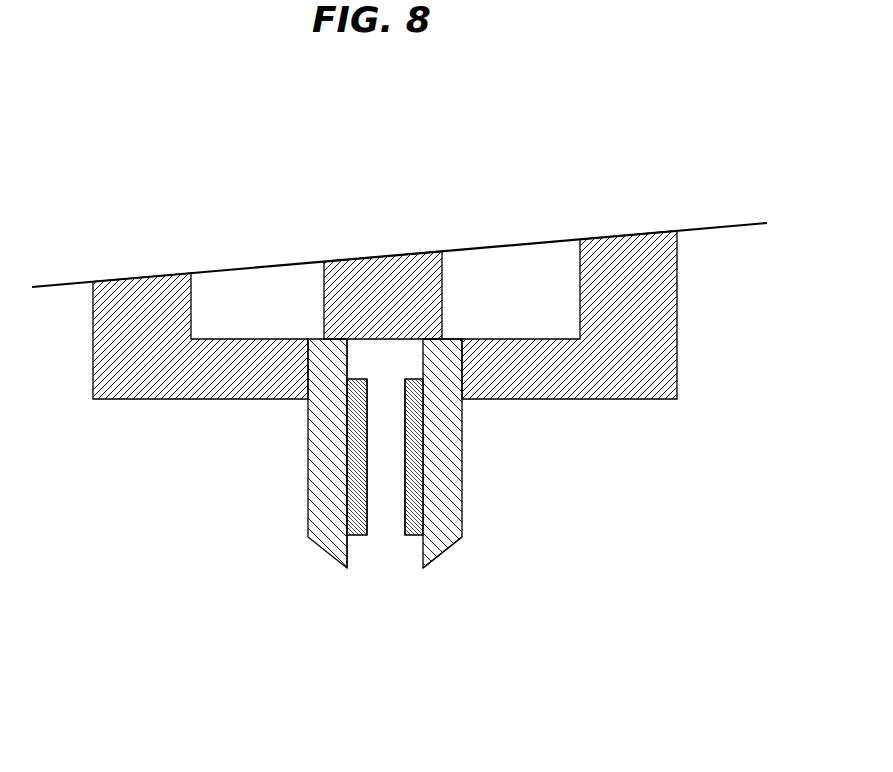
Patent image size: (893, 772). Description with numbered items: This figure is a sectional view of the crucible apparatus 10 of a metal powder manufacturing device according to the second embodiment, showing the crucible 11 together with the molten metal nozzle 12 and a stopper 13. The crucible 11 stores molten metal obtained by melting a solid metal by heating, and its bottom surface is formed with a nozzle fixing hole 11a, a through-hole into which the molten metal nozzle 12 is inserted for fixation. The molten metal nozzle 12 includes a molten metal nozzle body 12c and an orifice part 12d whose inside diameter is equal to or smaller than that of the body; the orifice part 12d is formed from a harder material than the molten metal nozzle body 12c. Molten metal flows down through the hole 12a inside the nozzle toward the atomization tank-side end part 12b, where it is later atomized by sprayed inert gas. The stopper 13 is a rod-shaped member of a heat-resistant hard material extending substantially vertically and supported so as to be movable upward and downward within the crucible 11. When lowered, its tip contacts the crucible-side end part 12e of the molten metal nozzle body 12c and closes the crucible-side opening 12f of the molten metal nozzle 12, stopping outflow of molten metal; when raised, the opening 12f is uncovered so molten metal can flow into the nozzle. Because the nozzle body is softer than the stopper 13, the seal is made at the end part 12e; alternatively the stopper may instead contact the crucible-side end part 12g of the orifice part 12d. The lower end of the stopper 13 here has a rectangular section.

The crucible apparatus 10 is at (190, 222).
The crucible 11 is at (421, 366).
The nozzle fixing hole 11a is at (463, 380).
The molten metal nozzle 12 is at (389, 409).
The hole 12a is at (403, 515).
The atomization tank-side end part 12b is at (325, 548).
The molten metal nozzle body 12c is at (445, 435).
The orifice part 12d is at (433, 555).
The crucible-side end part 12e is at (445, 338).
The crucible-side opening 12f is at (365, 381).
The crucible-side end part of the orifice part 12g is at (383, 370).
The stopper 13 is at (403, 270).